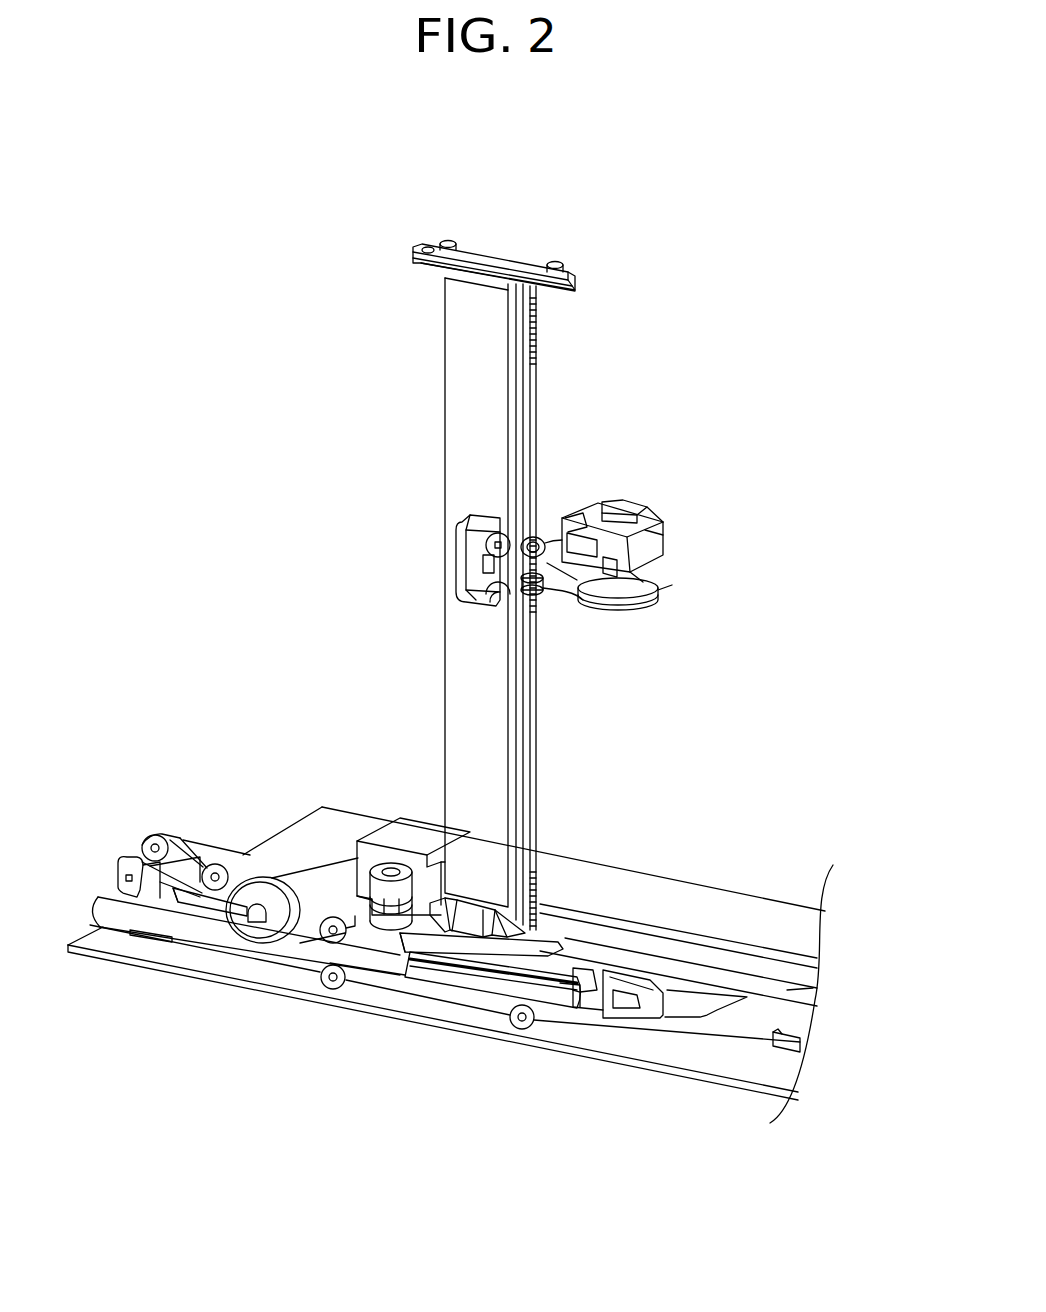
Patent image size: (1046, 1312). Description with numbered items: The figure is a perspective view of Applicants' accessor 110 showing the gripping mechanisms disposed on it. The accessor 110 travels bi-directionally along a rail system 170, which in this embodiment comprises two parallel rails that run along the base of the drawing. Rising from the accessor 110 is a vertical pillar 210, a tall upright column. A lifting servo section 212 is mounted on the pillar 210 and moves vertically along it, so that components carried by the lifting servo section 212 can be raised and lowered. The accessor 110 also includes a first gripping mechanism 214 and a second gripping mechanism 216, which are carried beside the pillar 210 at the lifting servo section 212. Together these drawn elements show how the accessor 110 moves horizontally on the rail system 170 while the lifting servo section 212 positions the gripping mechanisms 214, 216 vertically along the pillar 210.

The accessor 110 is at (392, 497).
The rail system 170 is at (795, 1046).
The vertical pillar 210 is at (462, 401).
The lifting servo section 212 is at (577, 593).
The first gripping mechanism 214 is at (670, 548).
The second gripping mechanism 216 is at (660, 527).